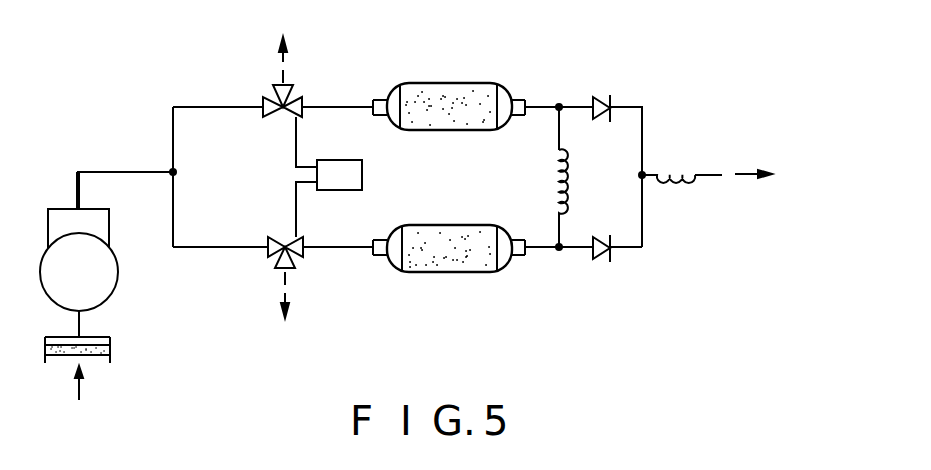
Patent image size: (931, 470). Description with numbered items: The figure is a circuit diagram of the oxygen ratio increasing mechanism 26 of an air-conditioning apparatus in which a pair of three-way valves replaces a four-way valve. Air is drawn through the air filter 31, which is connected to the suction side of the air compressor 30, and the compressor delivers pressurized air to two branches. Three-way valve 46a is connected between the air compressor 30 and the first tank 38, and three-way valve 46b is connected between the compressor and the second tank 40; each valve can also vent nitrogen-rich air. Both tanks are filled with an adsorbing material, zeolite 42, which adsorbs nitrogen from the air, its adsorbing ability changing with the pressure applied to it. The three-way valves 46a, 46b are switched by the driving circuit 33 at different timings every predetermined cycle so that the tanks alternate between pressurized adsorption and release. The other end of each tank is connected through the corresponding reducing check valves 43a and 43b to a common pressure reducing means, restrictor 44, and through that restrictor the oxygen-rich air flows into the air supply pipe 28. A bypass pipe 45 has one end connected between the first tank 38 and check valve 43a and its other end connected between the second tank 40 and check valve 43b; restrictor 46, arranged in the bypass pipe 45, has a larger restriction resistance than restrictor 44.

The oxygen ratio increasing mechanism 26 is at (492, 50).
The air supply pipe 28 is at (712, 170).
The air compressor 30 is at (107, 283).
The air filter 31 is at (110, 350).
The driving circuit 33 is at (355, 177).
The first tank 38 is at (503, 87).
The second tank 40 is at (492, 273).
The zeolite 42 is at (438, 95).
The check valve 43a is at (603, 95).
The check valve 43b is at (605, 258).
The restrictor 44 is at (680, 170).
The bypass pipe 45 is at (560, 130).
The restrictor 46 is at (565, 185).
The three-way valve 46a is at (298, 95).
The three-way valve 46b is at (302, 263).